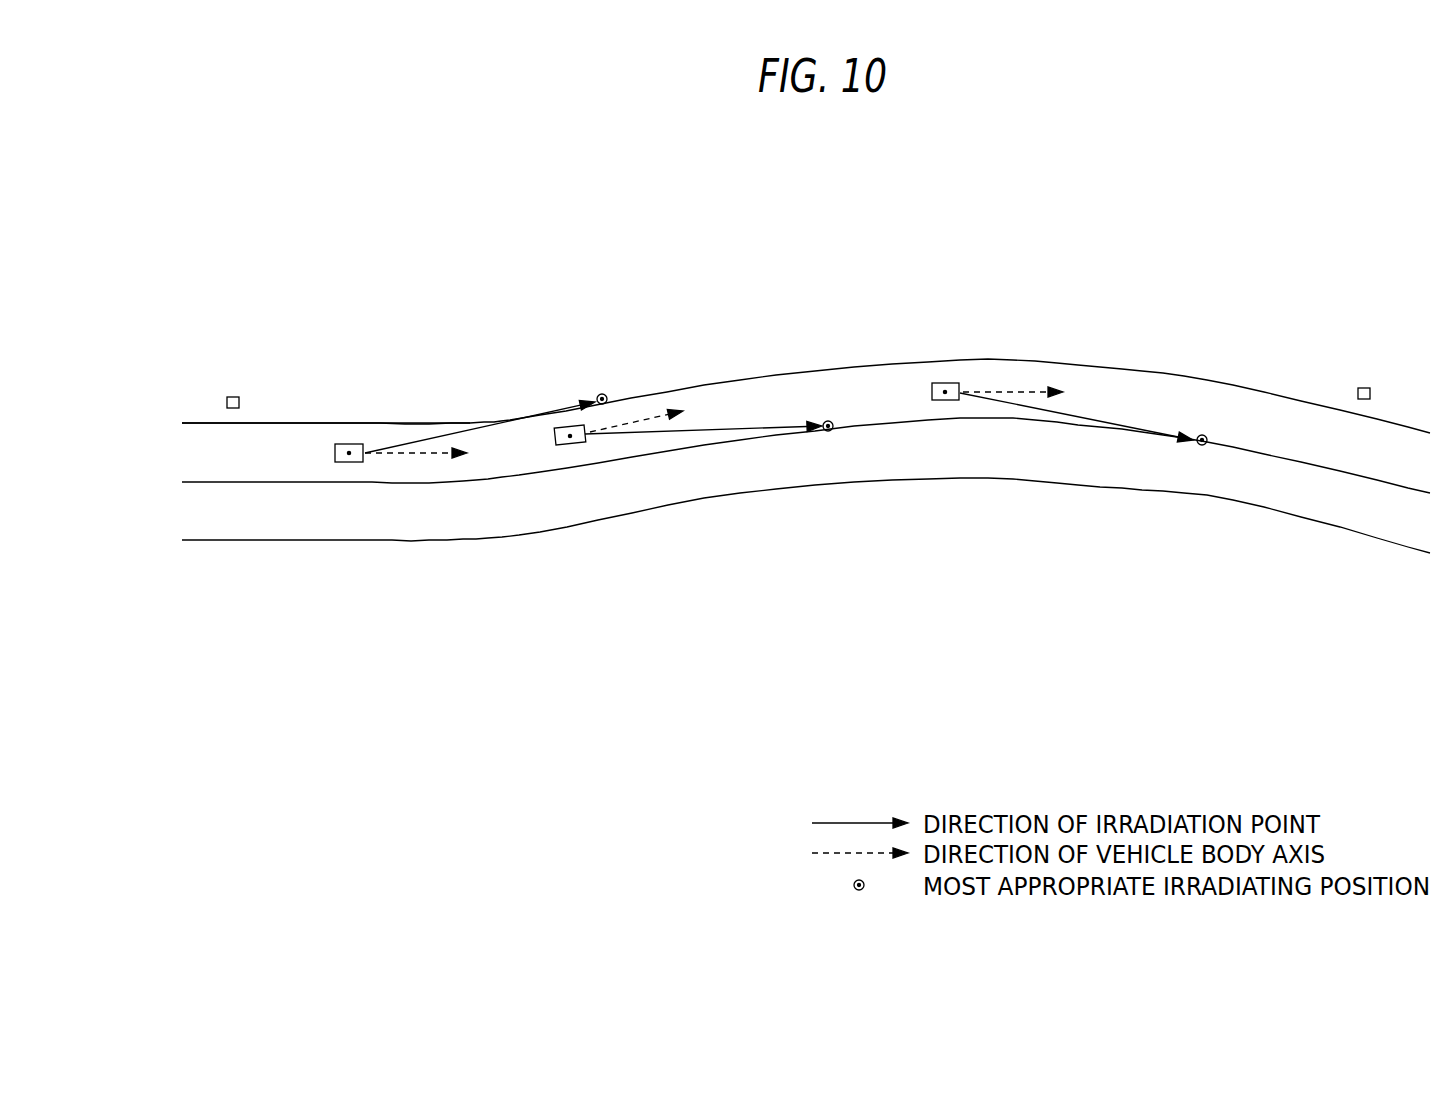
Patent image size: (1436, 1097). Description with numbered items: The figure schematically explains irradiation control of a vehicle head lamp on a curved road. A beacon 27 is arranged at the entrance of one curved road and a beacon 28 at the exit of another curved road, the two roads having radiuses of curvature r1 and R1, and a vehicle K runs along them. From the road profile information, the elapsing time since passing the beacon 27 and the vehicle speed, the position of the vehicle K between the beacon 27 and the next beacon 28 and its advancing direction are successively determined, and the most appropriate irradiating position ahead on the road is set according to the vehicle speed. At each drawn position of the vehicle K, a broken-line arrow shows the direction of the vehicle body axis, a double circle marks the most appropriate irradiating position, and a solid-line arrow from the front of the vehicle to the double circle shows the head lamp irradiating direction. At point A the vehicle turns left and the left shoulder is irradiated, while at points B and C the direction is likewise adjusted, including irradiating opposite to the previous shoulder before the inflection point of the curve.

The radius of curvature R1 is at (963, 498).
The radius of curvature r1 is at (418, 408).
The vehicle K is at (764, 451).
The point A is at (350, 444).
The point B is at (573, 437).
The point C is at (945, 400).
The beacon 27 is at (232, 397).
The beacon 28 is at (1363, 388).